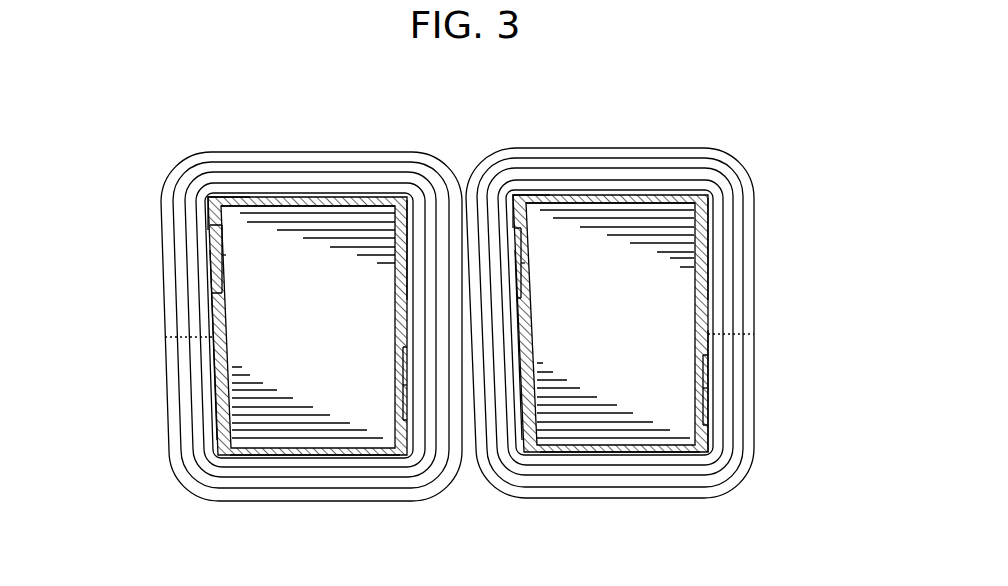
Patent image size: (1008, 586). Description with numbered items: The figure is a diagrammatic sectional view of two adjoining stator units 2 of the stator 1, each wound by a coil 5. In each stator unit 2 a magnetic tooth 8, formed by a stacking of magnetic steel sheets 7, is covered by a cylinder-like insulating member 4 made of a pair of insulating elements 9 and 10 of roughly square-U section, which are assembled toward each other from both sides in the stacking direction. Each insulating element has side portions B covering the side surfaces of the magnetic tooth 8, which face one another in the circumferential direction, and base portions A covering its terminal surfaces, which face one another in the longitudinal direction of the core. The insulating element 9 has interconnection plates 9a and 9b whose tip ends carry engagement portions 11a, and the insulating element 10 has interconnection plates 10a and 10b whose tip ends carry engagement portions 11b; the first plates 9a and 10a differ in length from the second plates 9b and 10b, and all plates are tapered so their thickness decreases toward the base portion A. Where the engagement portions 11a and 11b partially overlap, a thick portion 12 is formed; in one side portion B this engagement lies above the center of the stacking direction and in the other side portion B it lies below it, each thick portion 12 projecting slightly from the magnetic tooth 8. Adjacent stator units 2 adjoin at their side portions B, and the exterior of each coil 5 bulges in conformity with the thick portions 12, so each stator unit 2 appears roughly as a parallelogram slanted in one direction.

The stator 1 is at (764, 142).
The stator unit 2 is at (172, 492).
The insulating member 4 is at (728, 288).
The coil 5 is at (241, 155).
The magnetic steel sheets 7 is at (333, 211).
The magnetic tooth 8 is at (306, 253).
The insulating element 9 is at (353, 196).
The first interconnection plate 9a is at (406, 225).
The second interconnection plate 9b is at (210, 200).
The insulating element 10 is at (276, 456).
The first interconnection plate 10a is at (218, 402).
The second interconnection plate 10b is at (702, 430).
The engagement portion 11a is at (210, 283).
The engagement portion 11b is at (228, 262).
The thick portion 12 is at (196, 247).
The base portion A is at (278, 197).
The side portion B is at (212, 336).